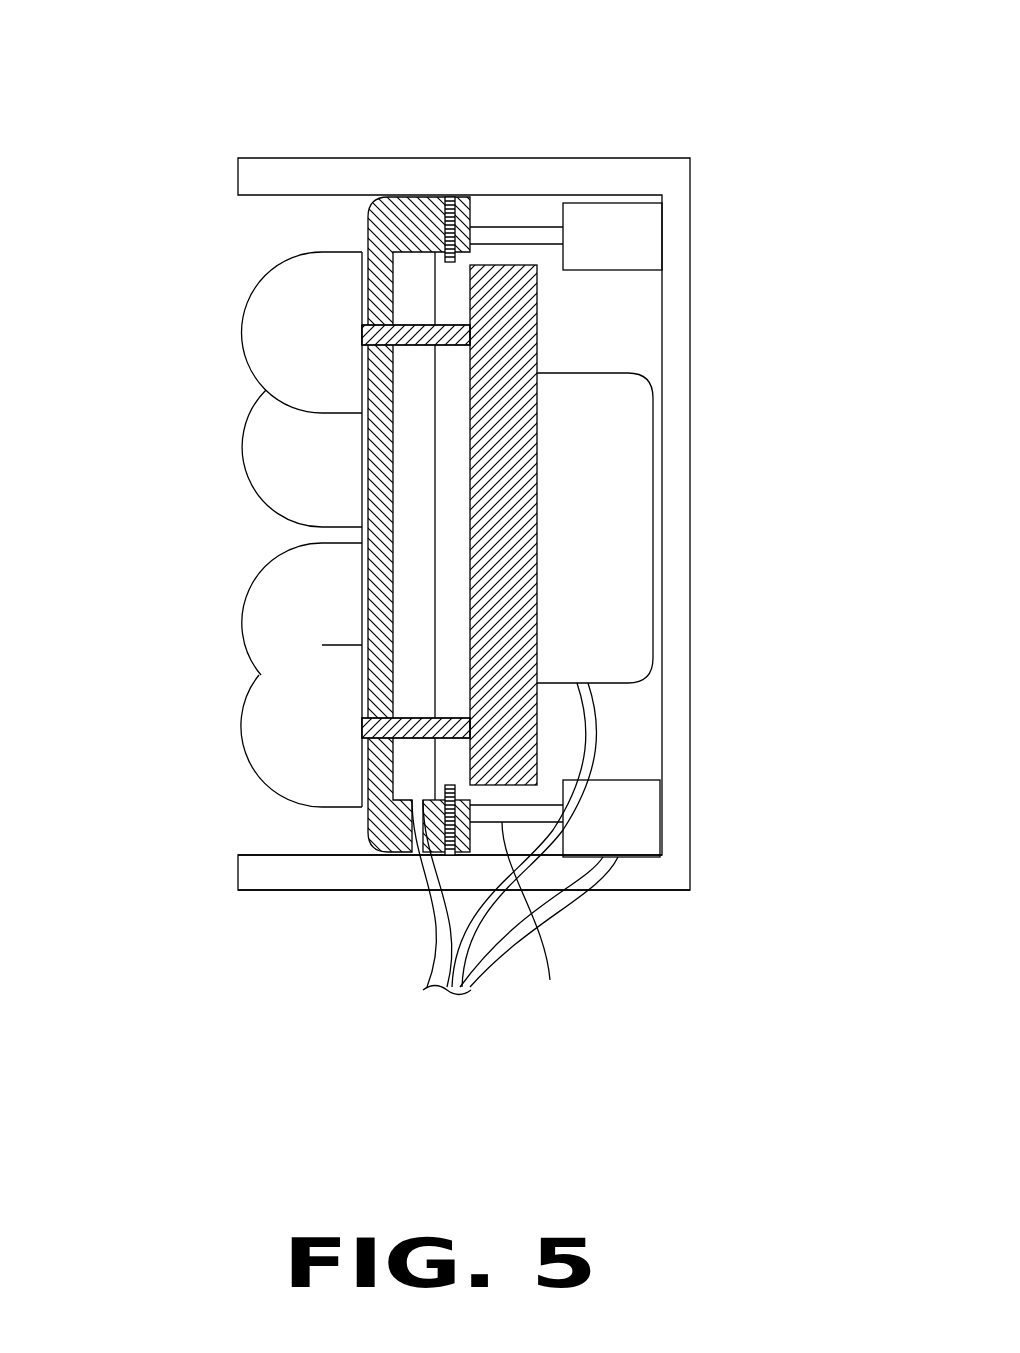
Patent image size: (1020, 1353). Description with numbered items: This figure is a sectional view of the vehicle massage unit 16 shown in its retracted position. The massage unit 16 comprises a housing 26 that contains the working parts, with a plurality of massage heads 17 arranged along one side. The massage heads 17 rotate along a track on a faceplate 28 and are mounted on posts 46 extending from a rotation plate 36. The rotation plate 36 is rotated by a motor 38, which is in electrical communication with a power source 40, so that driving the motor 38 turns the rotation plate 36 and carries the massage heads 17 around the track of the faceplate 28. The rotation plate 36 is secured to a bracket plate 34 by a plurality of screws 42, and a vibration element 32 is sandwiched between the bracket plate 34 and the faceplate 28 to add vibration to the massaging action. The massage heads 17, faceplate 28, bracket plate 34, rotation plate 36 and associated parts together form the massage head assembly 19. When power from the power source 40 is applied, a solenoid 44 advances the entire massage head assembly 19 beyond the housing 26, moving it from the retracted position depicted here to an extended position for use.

The vehicle massage unit 16 is at (713, 150).
The massage heads 17 is at (248, 693).
The massage head assembly 19 is at (227, 250).
The housing 26 is at (620, 890).
The faceplate 28 is at (370, 217).
The vibration element 32 is at (413, 790).
The bracket plate 34 is at (463, 257).
The rotation plate 36 is at (537, 358).
The motor 38 is at (657, 503).
The power source 40 is at (433, 987).
The screws 42 is at (450, 195).
The solenoid 44 is at (663, 823).
The posts 46 is at (533, 925).